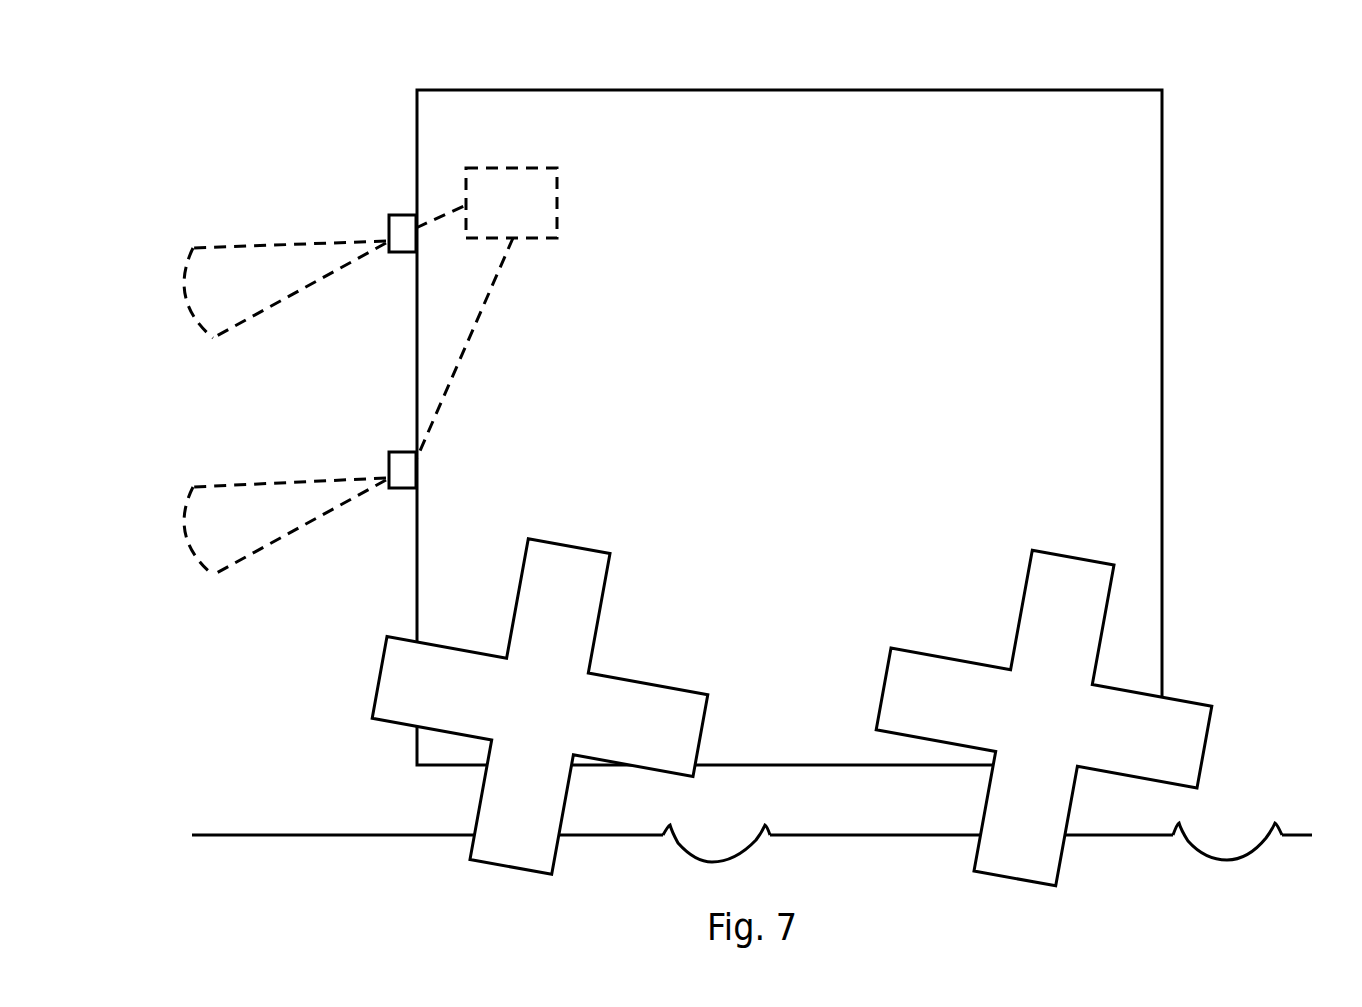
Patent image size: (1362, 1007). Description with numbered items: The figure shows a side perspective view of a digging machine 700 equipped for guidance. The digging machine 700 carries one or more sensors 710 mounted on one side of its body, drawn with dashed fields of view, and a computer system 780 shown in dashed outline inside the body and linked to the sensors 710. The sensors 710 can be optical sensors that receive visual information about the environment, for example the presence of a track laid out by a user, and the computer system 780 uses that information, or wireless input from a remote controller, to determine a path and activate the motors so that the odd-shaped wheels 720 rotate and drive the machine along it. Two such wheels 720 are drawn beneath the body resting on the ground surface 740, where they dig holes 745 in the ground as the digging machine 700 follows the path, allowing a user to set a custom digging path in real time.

The digging machine 700 is at (1162, 137).
The sensors 710 is at (398, 215).
The wheel / ground engaging member 720 is at (573, 547).
The ground surface 740 is at (392, 838).
The depression / hole in ground 745 is at (720, 862).
The computer system 780 is at (512, 168).